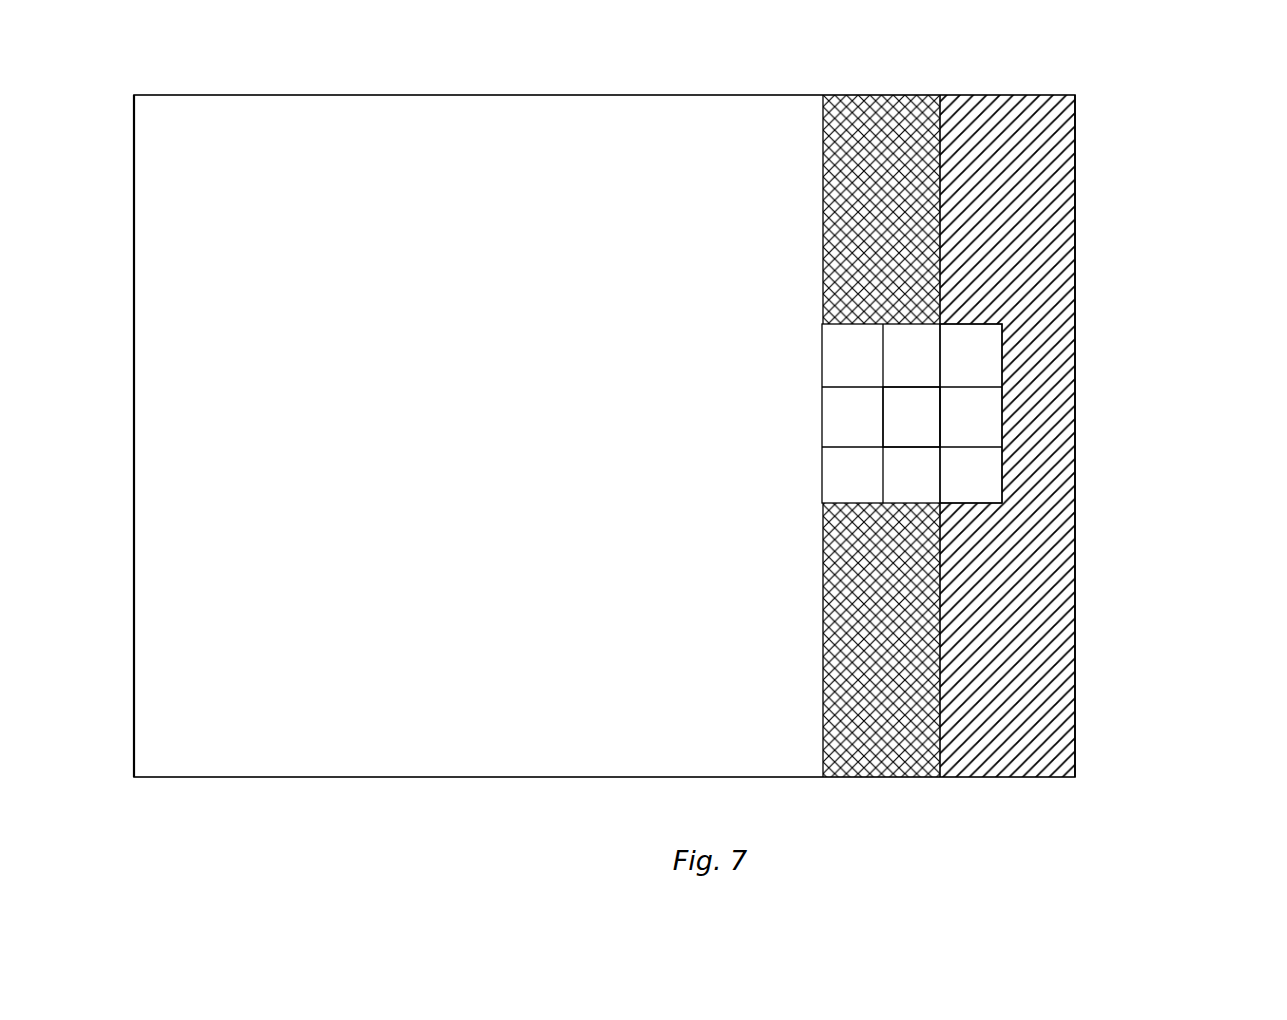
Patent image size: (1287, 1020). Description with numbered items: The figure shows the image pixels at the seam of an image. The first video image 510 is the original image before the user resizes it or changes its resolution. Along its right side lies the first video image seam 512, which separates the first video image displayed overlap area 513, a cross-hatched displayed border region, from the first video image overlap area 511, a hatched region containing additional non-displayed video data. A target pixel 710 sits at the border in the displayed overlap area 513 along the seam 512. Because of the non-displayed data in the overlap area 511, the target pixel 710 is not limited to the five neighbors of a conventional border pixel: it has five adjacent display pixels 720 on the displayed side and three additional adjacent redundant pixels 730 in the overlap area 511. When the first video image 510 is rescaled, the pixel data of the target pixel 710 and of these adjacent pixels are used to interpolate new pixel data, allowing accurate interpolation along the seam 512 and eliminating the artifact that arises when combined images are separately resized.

The first video image 510 is at (604, 436).
The first video image overlap area 511 is at (1075, 645).
The first video image seam 512 is at (938, 97).
The first video image displayed overlap area 513 is at (838, 582).
The target pixel 710 is at (898, 418).
The adjacent display pixels 720 is at (845, 492).
The adjacent redundant pixels 730 is at (975, 477).